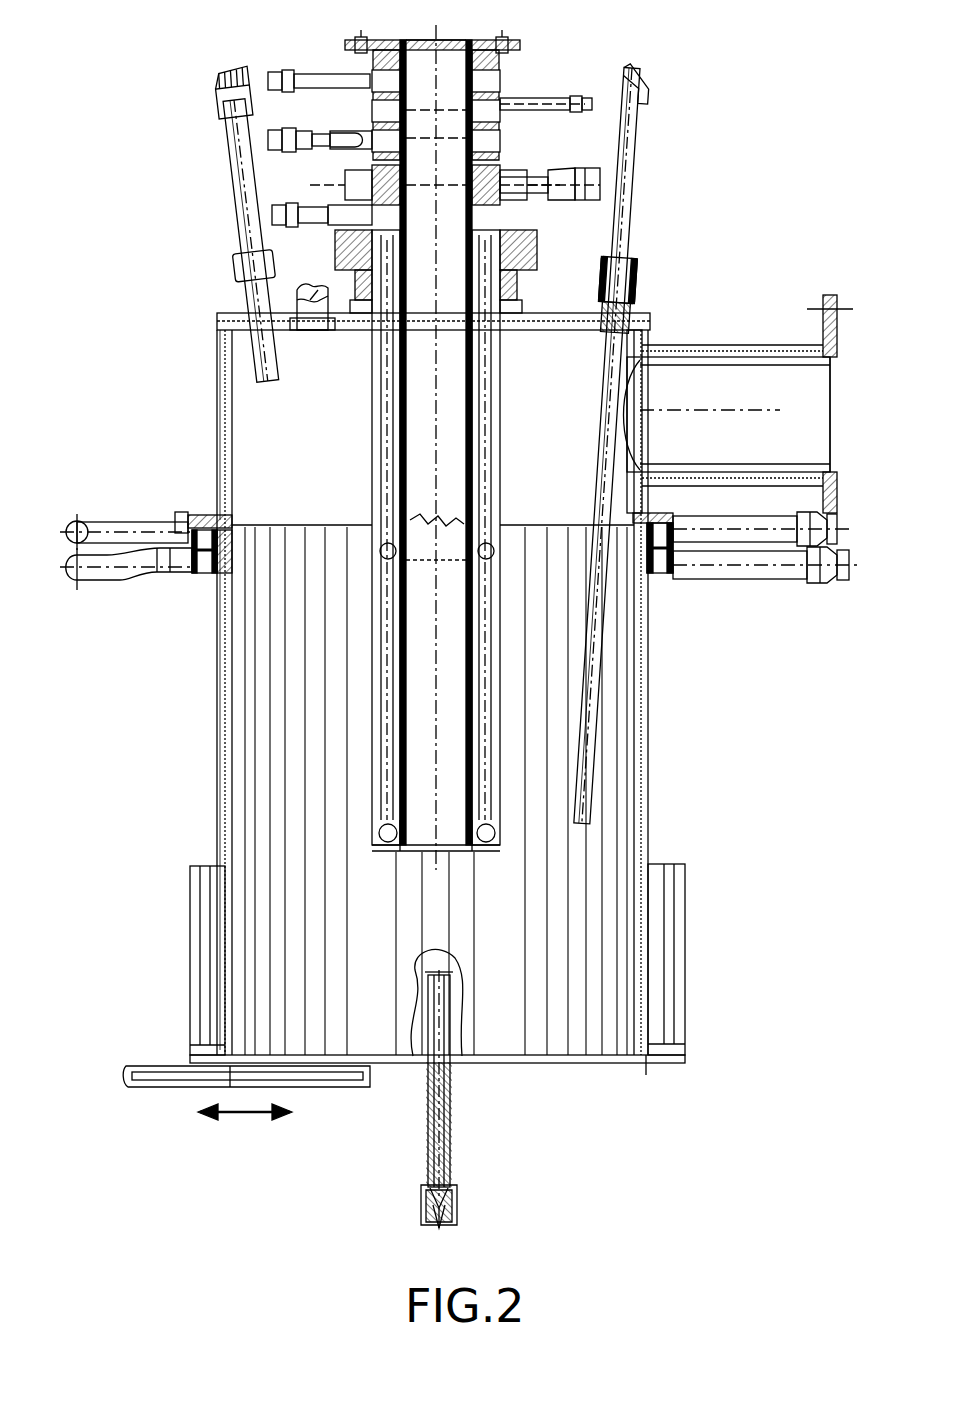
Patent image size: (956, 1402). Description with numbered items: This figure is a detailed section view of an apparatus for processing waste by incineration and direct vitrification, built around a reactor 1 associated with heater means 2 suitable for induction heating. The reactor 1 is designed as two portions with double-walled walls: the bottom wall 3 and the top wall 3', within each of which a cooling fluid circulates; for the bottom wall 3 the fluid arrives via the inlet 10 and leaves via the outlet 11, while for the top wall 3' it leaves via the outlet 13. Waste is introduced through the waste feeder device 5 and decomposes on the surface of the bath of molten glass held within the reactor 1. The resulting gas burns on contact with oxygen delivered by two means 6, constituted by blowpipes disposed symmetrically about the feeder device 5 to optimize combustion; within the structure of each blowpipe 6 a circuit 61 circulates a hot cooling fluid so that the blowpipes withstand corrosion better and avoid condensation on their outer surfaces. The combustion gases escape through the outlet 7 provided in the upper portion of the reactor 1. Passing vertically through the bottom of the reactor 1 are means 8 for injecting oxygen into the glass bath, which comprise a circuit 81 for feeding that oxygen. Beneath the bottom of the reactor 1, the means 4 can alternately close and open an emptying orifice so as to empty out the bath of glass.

The reactor 1 is at (658, 736).
The heater means 2 is at (690, 946).
The wall 3 is at (183, 790).
The wall 3' is at (175, 425).
The means for emptying out the bath of glass 4 is at (325, 1090).
The waste feeder device 5 is at (512, 74).
The means for delivering oxygen 6 is at (228, 134).
The circuit for circulating a cooling fluid 61 is at (628, 182).
The outlet for the combustion gases 7 is at (680, 385).
The means for injecting oxygen into the bath of glass 8 is at (456, 1110).
The circuit for feeding oxygen 81 is at (457, 1196).
The cooling fluid inlet 10 is at (102, 582).
The cooling fluid outlet 11 is at (102, 521).
The cooling fluid outlet 13 is at (314, 284).